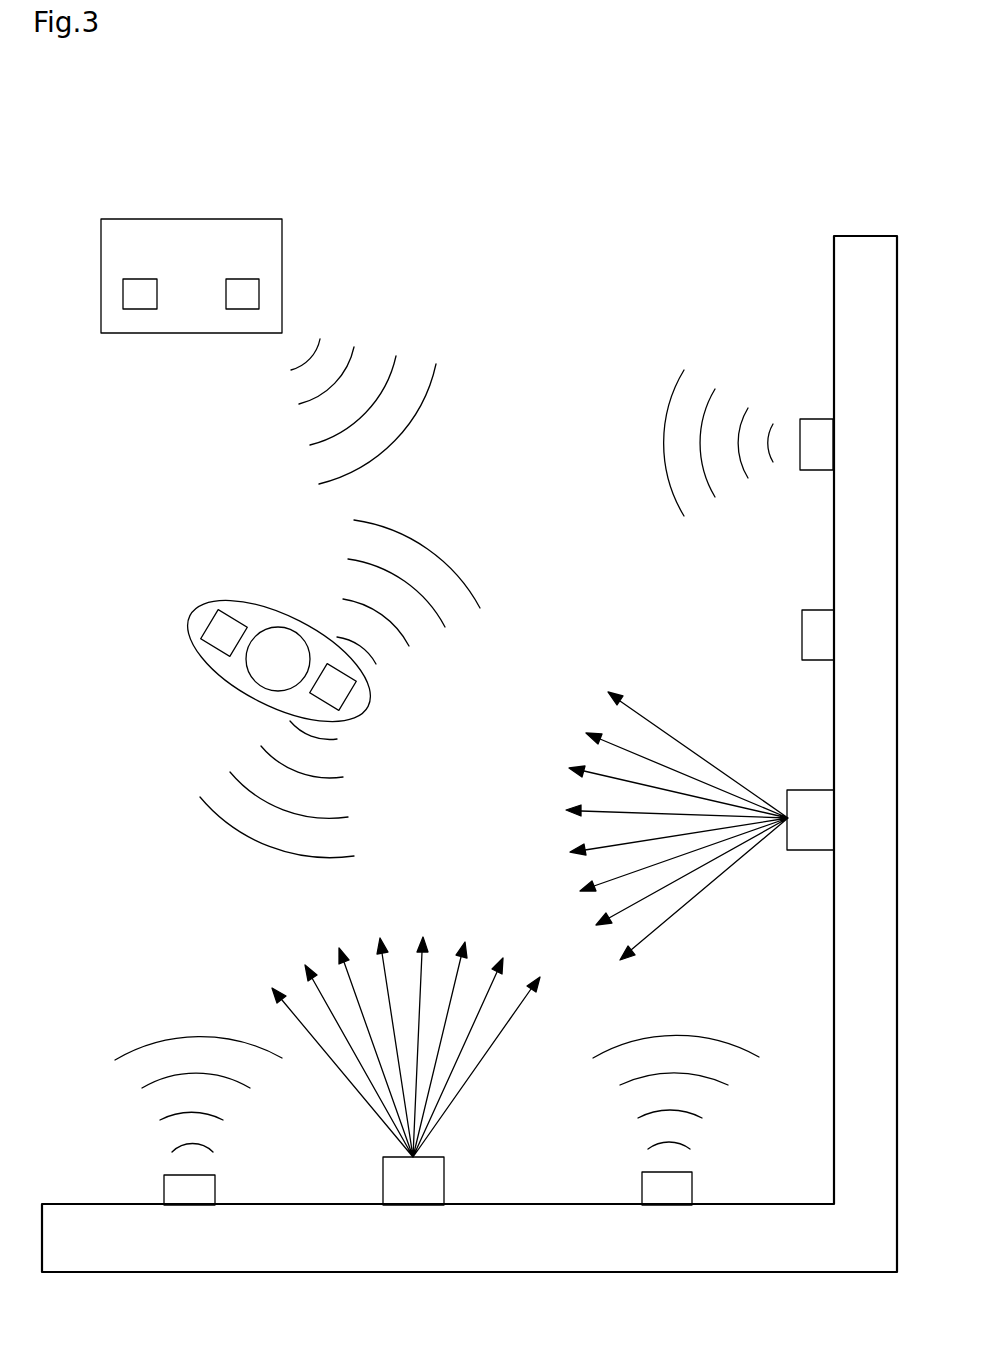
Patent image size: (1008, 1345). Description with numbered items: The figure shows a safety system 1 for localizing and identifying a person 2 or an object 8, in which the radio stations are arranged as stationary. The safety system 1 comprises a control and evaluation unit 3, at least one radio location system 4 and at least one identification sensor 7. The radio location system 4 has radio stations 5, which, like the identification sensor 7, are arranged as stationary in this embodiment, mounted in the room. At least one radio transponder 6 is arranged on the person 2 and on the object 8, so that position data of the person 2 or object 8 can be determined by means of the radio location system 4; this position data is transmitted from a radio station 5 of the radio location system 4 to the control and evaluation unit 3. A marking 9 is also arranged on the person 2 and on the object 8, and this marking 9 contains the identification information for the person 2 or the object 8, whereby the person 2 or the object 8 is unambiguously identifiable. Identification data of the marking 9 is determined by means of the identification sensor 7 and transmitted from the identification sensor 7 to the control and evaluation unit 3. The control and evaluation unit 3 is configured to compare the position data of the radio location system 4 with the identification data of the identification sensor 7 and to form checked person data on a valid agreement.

The safety system 1 is at (732, 188).
The person 2 is at (235, 675).
The control and evaluation unit 3 is at (818, 643).
The radio location system 4 is at (553, 443).
The radio station 5 is at (817, 458).
The radio transponder 6 is at (245, 290).
The identification sensor 7 is at (818, 803).
The object 8 is at (192, 321).
The marking 9 is at (135, 289).